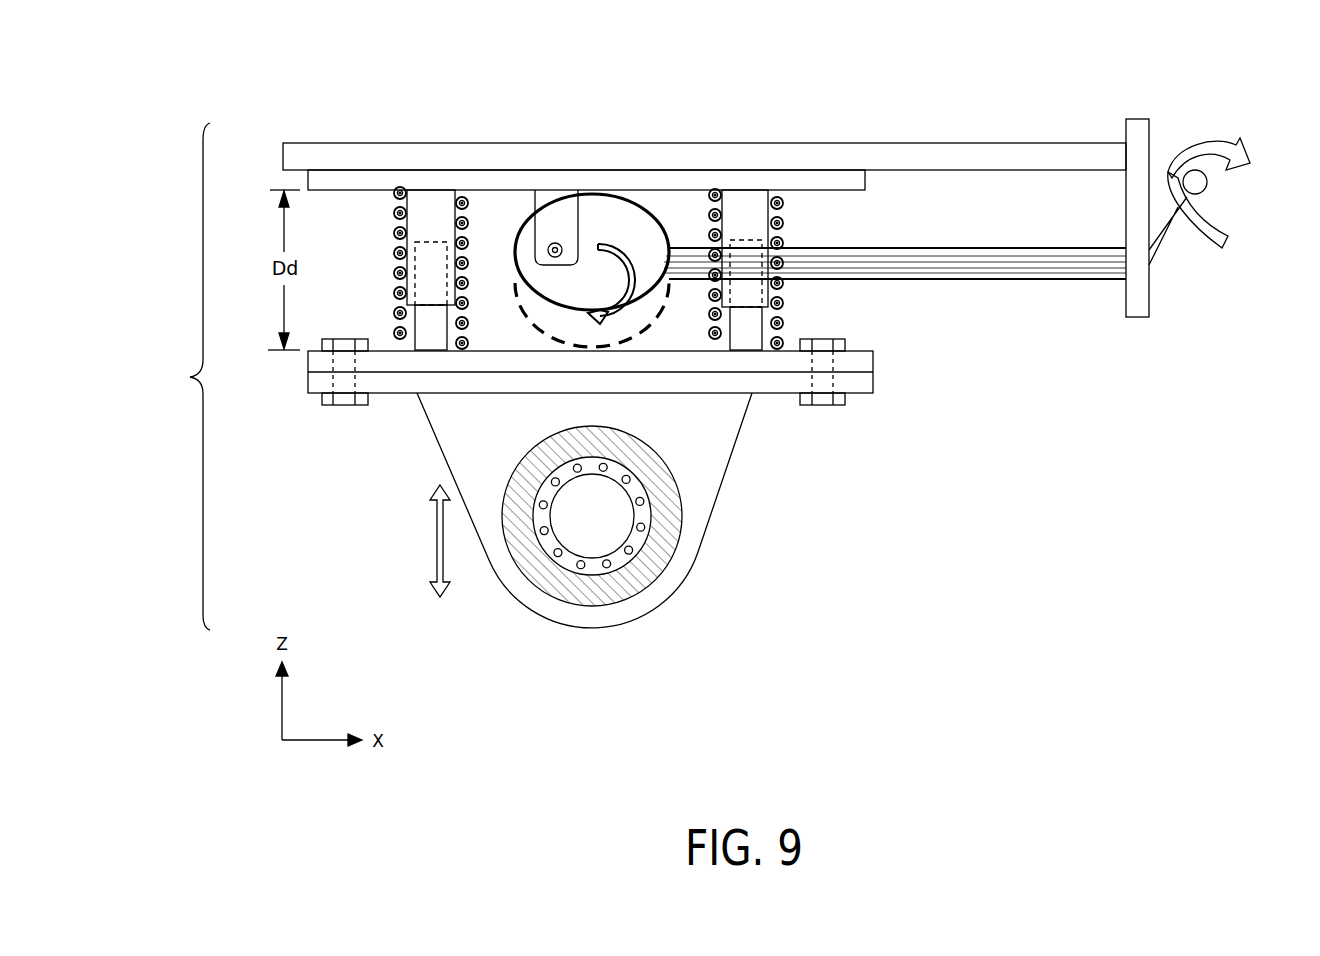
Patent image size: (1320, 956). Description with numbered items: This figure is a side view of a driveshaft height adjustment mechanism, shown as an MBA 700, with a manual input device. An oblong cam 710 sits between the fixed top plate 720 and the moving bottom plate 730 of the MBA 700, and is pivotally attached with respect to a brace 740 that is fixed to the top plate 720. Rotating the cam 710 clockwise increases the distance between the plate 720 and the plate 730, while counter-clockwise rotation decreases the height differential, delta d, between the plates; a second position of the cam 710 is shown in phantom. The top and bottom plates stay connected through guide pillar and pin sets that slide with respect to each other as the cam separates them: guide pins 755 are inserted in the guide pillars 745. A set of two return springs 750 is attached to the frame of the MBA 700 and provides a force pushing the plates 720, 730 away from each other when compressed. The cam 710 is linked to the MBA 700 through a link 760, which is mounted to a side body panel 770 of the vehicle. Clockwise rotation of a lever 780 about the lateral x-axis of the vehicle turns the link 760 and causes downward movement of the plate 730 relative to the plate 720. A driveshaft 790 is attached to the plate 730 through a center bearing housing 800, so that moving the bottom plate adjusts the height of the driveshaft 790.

The MBA 700 is at (178, 376).
The cam 710 is at (633, 217).
The top plate 720 is at (352, 182).
The bottom plate 730 is at (873, 364).
The brace 740 is at (553, 208).
The guide pillar 745 is at (413, 202).
The return spring 750 is at (398, 253).
The guide pin 755 is at (437, 240).
The link 760 is at (945, 273).
The side body panel 770 is at (1138, 130).
The lever 780 is at (1205, 182).
The driveshaft 790 is at (603, 530).
The center bearing housing 800 is at (717, 455).